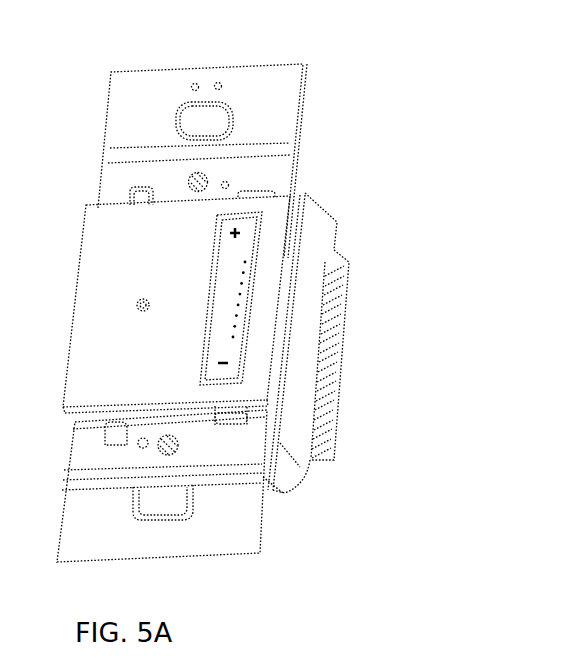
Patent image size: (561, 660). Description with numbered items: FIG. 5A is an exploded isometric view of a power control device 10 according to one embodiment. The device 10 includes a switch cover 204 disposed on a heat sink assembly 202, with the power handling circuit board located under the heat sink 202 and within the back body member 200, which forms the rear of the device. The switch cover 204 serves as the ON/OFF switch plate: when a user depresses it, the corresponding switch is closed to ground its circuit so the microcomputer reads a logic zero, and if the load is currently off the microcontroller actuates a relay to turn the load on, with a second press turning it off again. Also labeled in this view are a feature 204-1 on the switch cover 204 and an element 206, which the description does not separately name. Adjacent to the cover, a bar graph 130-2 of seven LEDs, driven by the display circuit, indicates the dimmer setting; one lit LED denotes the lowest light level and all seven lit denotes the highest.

The power control device 10 is at (173, 58).
The bar graph 130-2 is at (243, 283).
The back body member 200 is at (349, 311).
The heat sink assembly 202 is at (296, 106).
The switch cover 204 is at (97, 257).
The faceplate screw hole 204-1 is at (136, 308).
The slider actuator 206 is at (250, 230).